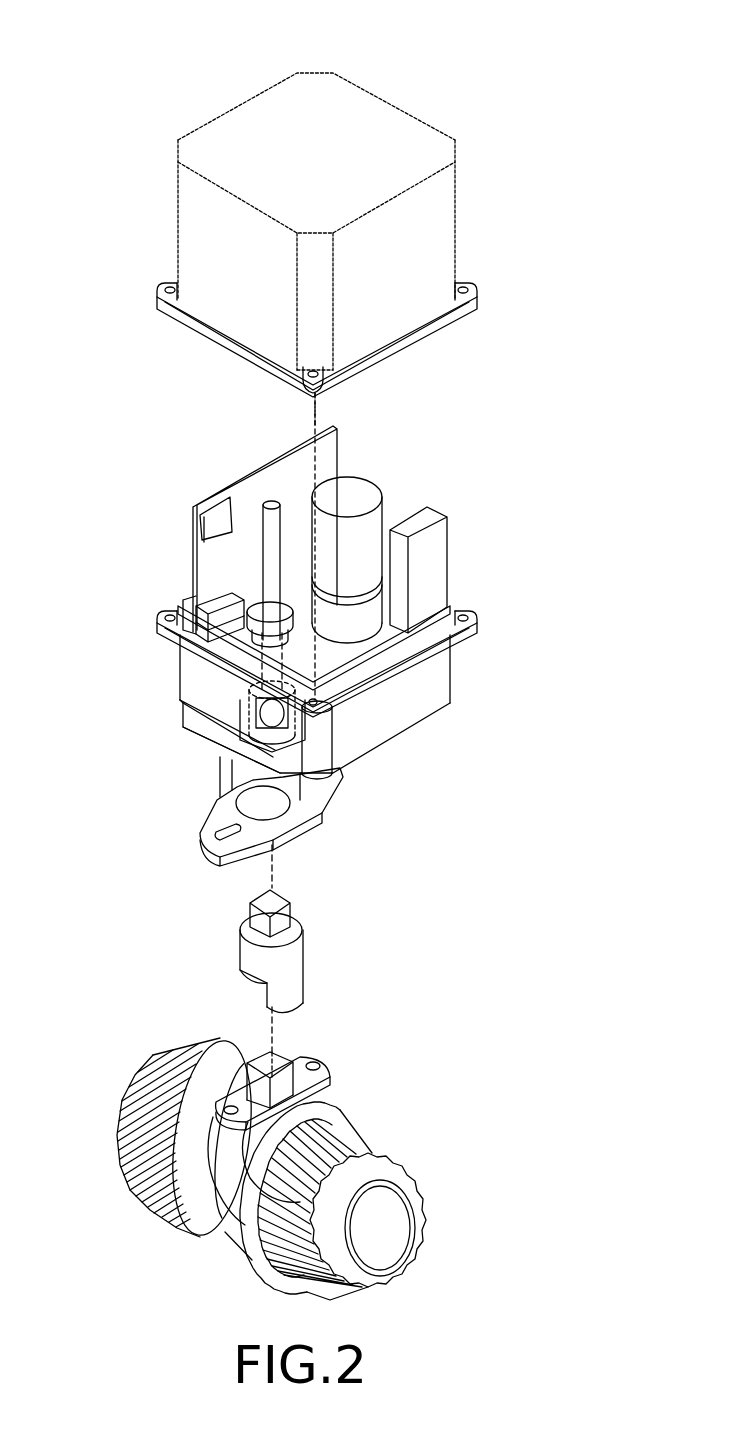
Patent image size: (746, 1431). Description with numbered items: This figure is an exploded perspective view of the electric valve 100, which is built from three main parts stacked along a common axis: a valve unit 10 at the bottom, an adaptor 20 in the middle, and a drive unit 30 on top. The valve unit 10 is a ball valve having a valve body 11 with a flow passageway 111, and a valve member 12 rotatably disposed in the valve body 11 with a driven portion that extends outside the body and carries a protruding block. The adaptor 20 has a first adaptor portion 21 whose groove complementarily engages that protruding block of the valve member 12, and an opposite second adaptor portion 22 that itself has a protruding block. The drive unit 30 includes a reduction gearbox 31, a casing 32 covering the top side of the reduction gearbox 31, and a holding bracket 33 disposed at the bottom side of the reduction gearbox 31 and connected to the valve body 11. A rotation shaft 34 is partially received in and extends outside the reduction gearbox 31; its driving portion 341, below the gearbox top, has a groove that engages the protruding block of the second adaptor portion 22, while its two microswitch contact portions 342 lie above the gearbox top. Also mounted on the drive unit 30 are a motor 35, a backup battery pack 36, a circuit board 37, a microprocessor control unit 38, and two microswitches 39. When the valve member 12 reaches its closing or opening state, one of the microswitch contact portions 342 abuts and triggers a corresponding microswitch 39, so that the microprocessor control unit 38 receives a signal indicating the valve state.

The electric valve 100 is at (133, 107).
The valve unit 10 is at (413, 1122).
The valve body 11 is at (250, 1253).
The flow passageway 111 is at (393, 1233).
The valve member 12 is at (282, 1060).
The adaptor 20 is at (228, 945).
The first adaptor portion 21 is at (257, 987).
The second adaptor portion 22 is at (283, 918).
The drive unit 30 is at (460, 182).
The reduction gearbox 31 is at (435, 677).
The casing 32 is at (447, 235).
The holding bracket 33 is at (303, 791).
The rotation shaft 34 is at (268, 552).
The driving portion 341 is at (212, 747).
The microswitch contact portions 342 is at (287, 627).
The motor 35 is at (367, 488).
The backup battery pack 36 is at (433, 538).
The circuit board 37 is at (265, 483).
The microprocessor control unit 38 is at (215, 518).
The microswitches 39 is at (218, 600).